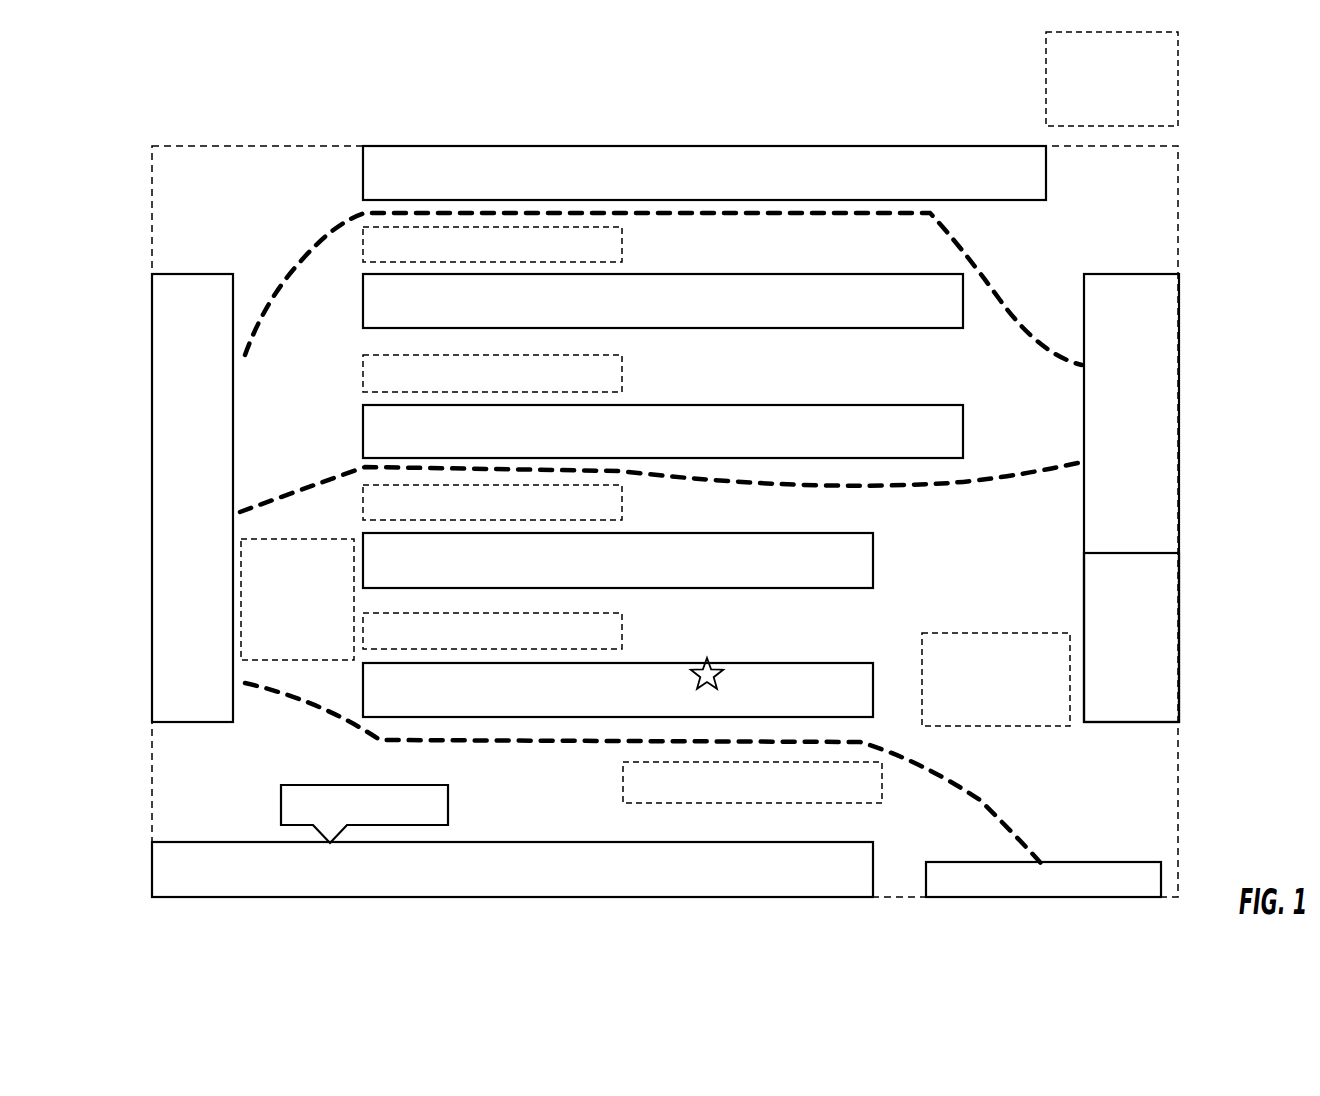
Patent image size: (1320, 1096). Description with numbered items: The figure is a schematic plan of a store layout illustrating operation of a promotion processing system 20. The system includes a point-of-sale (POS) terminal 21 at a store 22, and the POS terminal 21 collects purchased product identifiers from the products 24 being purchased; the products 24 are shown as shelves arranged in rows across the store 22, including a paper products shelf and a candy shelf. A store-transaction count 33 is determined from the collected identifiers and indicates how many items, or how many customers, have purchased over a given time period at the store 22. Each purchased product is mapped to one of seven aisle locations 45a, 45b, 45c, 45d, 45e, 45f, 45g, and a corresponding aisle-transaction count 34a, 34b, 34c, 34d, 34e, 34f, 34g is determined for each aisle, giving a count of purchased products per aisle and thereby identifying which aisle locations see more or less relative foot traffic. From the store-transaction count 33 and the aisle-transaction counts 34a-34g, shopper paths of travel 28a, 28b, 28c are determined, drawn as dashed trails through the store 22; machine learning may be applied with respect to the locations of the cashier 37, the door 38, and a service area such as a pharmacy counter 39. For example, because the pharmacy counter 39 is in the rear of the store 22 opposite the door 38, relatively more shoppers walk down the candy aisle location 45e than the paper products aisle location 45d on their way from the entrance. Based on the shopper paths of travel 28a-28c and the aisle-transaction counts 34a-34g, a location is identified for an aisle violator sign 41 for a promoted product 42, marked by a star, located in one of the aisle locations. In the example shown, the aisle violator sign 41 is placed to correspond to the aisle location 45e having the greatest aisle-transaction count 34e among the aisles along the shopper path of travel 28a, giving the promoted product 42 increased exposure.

The promotion processing system 20 is at (164, 94).
The point-of-sale (POS) terminal 21 is at (1172, 596).
The store 22 is at (148, 175).
The products 24 is at (470, 162).
The shopper path of travel 28a is at (1015, 828).
The shopper path of travel 28b is at (1023, 465).
The shopper path of travel 28c is at (935, 228).
The store-transaction count 33 is at (1180, 96).
The aisle-transaction count 34a is at (573, 225).
The aisle-transaction count 34b is at (363, 368).
The aisle-transaction count 34c is at (363, 510).
The aisle-transaction count 34d is at (363, 650).
The aisle-transaction count 34e is at (872, 803).
The aisle-transaction count 34f is at (241, 588).
The aisle-transaction count 34g is at (1050, 728).
The cashier 37 is at (1172, 448).
The door 38 is at (1117, 885).
The pharmacy counter 39 is at (168, 458).
The aisle violator sign 41 is at (335, 820).
The promoted product 42 is at (722, 676).
The aisle location 45a is at (773, 242).
The aisle location 45b is at (932, 372).
The aisle location 45c is at (950, 517).
The aisle location 45d is at (850, 625).
The aisle location 45e is at (397, 755).
The aisle location 45f is at (268, 365).
The aisle location 45g is at (1025, 550).